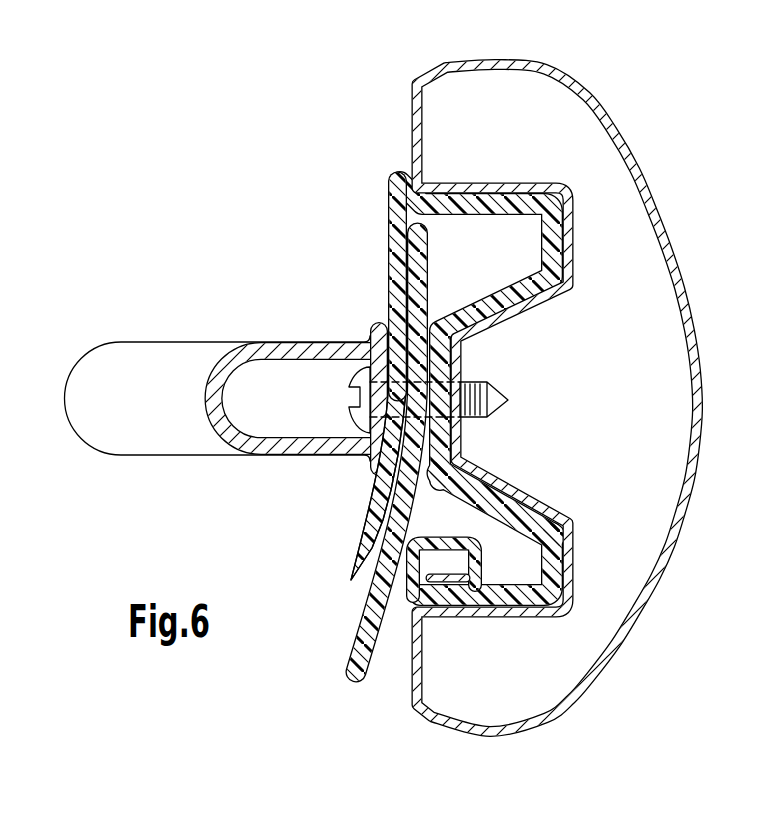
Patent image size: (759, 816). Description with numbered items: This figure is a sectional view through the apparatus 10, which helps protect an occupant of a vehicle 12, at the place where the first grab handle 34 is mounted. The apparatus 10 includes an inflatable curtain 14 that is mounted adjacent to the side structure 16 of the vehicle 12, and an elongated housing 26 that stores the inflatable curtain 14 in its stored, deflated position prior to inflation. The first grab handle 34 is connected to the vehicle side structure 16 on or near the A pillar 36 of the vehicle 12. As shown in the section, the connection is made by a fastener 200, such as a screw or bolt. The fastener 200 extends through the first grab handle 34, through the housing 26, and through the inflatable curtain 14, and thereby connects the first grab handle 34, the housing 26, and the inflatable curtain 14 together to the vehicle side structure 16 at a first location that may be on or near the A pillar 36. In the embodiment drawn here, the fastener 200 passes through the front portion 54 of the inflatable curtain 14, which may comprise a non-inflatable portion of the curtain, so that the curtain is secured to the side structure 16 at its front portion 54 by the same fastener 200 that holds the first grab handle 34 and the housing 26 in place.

The apparatus 10 is at (272, 531).
The vehicle 12 is at (490, 42).
The inflatable curtain 14 is at (393, 572).
The side structure 16 is at (620, 140).
The housing 26 is at (388, 215).
The first grab handle 34 is at (148, 382).
The A pillar 36 is at (667, 230).
The front portion 54 is at (373, 627).
The fastener 200 is at (367, 375).